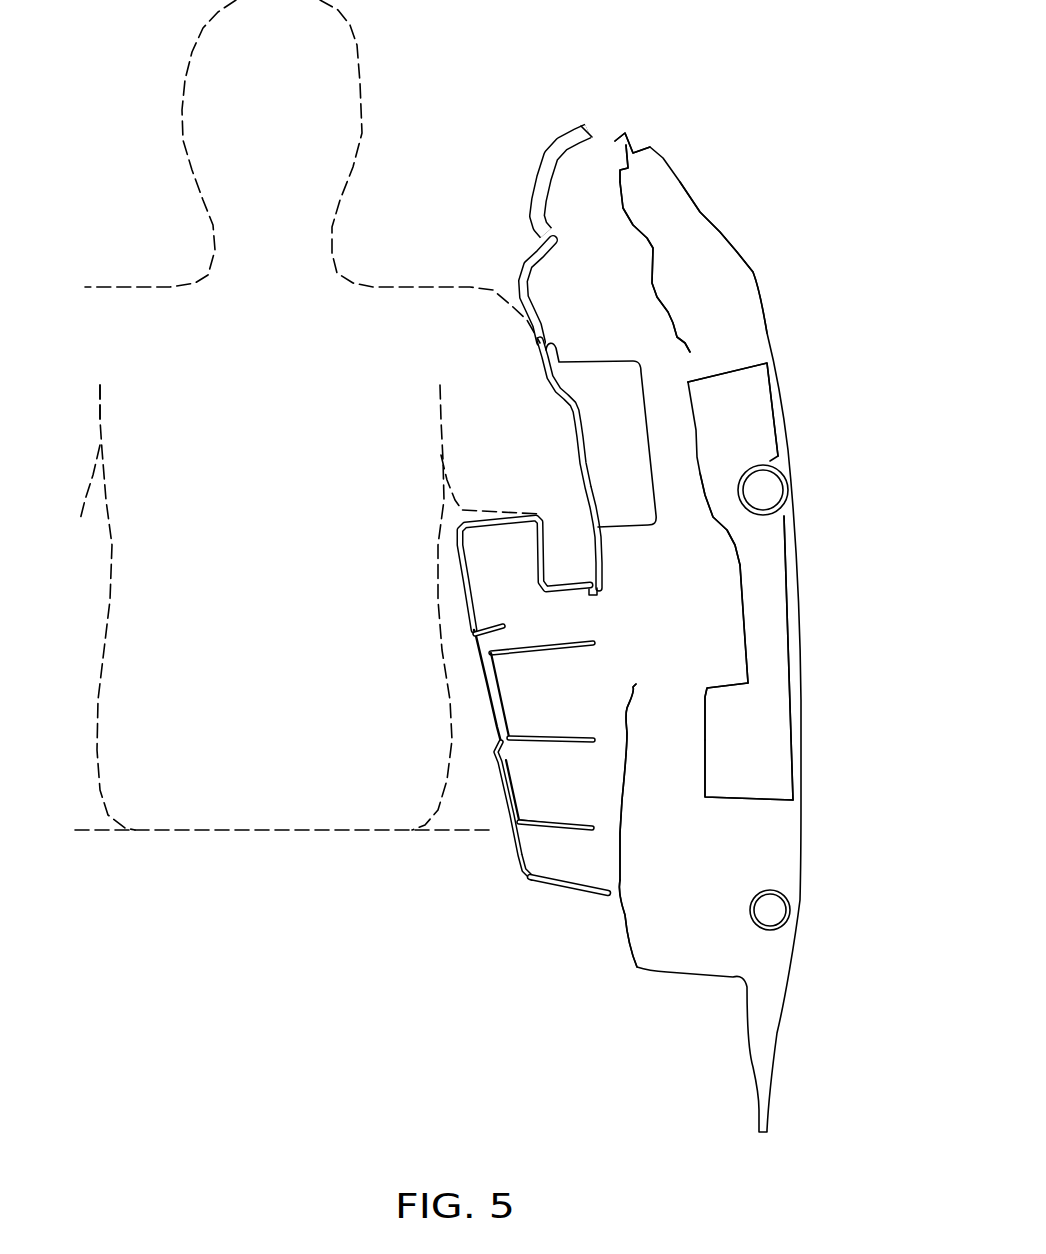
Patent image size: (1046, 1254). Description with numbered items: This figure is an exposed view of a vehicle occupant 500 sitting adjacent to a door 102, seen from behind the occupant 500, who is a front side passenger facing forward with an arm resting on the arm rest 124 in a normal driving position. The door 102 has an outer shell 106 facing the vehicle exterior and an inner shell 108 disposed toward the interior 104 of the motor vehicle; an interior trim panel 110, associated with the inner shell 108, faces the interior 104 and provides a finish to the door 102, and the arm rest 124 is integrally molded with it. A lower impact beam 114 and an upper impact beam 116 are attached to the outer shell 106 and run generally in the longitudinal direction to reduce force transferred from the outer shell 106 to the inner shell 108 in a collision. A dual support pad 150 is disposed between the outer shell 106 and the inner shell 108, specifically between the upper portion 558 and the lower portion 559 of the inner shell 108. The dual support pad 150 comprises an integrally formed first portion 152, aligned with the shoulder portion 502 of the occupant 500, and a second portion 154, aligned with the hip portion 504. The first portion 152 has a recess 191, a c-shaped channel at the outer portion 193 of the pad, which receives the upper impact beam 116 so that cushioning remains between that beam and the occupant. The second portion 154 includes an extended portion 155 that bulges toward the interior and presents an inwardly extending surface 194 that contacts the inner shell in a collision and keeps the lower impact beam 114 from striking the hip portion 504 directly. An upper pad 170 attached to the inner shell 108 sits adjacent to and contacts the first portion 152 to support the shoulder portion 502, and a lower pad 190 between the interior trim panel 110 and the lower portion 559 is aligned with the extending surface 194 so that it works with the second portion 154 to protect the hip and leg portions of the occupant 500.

The door 102 is at (720, 163).
The interior 104 is at (120, 210).
The outer shell 106 is at (722, 235).
The inner shell 108 is at (645, 150).
The interior trim panel 110 is at (498, 790).
The lower impact beam 114 is at (781, 909).
The upper impact beam 116 is at (773, 490).
The arm rest 124 is at (455, 600).
The dual support pad 150 is at (712, 350).
The first portion 152 is at (700, 476).
The second portion 154 is at (780, 708).
The extended portion 155 is at (745, 775).
The upper pad 170 is at (594, 370).
The lower pad 190 is at (557, 825).
The recess 191 is at (777, 455).
The outer portion 193 is at (767, 382).
The inwardly extending surface 194 is at (702, 740).
The vehicle occupant 500 is at (370, 70).
The shoulder portion 502 is at (479, 252).
The hip portion 504 is at (378, 740).
The upper portion 558 is at (648, 268).
The lower portion 559 is at (628, 738).